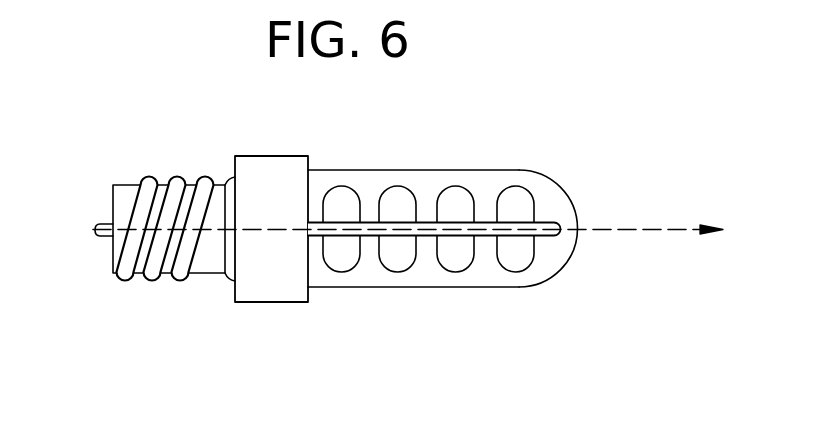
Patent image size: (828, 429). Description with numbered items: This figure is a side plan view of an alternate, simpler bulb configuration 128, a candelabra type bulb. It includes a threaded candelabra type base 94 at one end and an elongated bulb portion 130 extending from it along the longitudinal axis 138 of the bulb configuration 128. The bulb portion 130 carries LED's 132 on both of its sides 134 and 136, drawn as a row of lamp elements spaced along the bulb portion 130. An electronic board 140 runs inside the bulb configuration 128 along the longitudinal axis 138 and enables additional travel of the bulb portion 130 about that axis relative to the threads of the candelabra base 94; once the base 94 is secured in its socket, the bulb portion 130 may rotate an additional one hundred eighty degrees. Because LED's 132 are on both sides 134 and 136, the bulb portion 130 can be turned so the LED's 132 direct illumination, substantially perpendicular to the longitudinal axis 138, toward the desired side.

The candelabra type base 94 is at (152, 279).
The bulb configuration 128 is at (204, 128).
The bulb portion 130 is at (498, 169).
The LED's 132 is at (405, 193).
The side of the bulb portion 134 is at (550, 187).
The side of the bulb portion 136 is at (543, 265).
The longitudinal axis 138 is at (672, 227).
The electronic board 140 is at (418, 228).